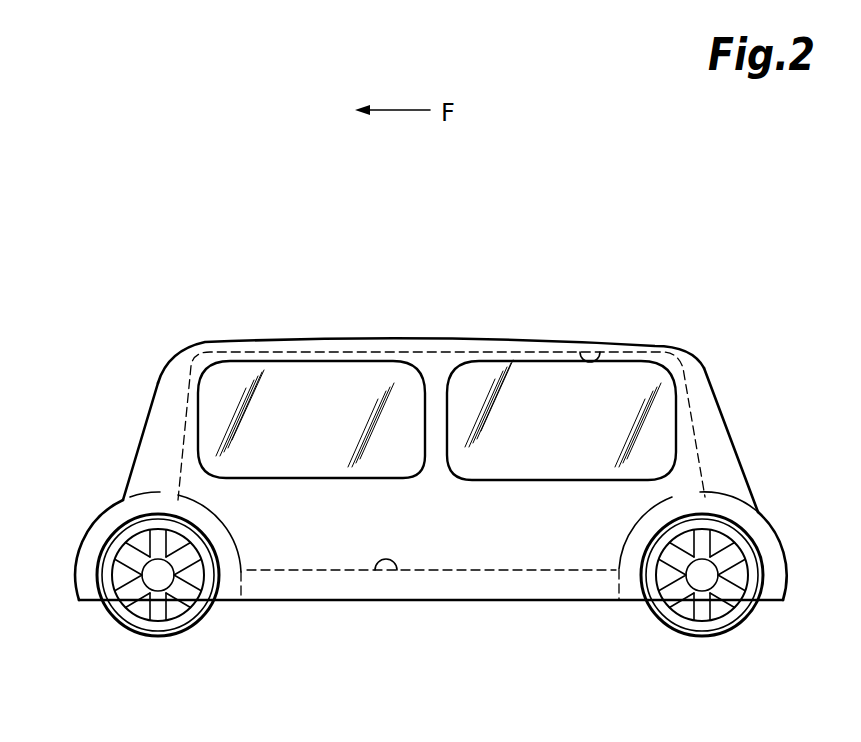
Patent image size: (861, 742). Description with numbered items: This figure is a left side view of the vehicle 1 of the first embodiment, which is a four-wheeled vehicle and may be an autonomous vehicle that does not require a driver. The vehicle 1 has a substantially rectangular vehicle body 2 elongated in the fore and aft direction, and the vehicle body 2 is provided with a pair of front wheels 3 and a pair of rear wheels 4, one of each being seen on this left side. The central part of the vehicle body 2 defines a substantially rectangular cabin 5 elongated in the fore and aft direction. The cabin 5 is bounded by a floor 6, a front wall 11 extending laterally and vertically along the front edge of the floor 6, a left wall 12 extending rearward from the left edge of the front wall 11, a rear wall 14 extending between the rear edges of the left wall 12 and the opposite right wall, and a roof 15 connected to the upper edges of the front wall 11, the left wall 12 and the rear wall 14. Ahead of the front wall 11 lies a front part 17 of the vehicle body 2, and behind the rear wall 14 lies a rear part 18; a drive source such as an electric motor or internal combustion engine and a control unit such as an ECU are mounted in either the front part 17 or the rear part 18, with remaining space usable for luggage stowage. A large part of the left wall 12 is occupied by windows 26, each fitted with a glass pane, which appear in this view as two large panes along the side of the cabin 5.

The vehicle 1 is at (657, 248).
The vehicle body 2 is at (700, 342).
The front wheels 3 is at (173, 628).
The rear wheels 4 is at (717, 630).
The cabin 5 is at (601, 362).
The floor 6 is at (378, 571).
The front wall 11 is at (150, 400).
The left wall 12 is at (460, 535).
The rear wall 14 is at (745, 441).
The roof 15 is at (462, 337).
The front part 17 is at (92, 533).
The rear part 18 is at (772, 538).
The windows 26 is at (312, 378).